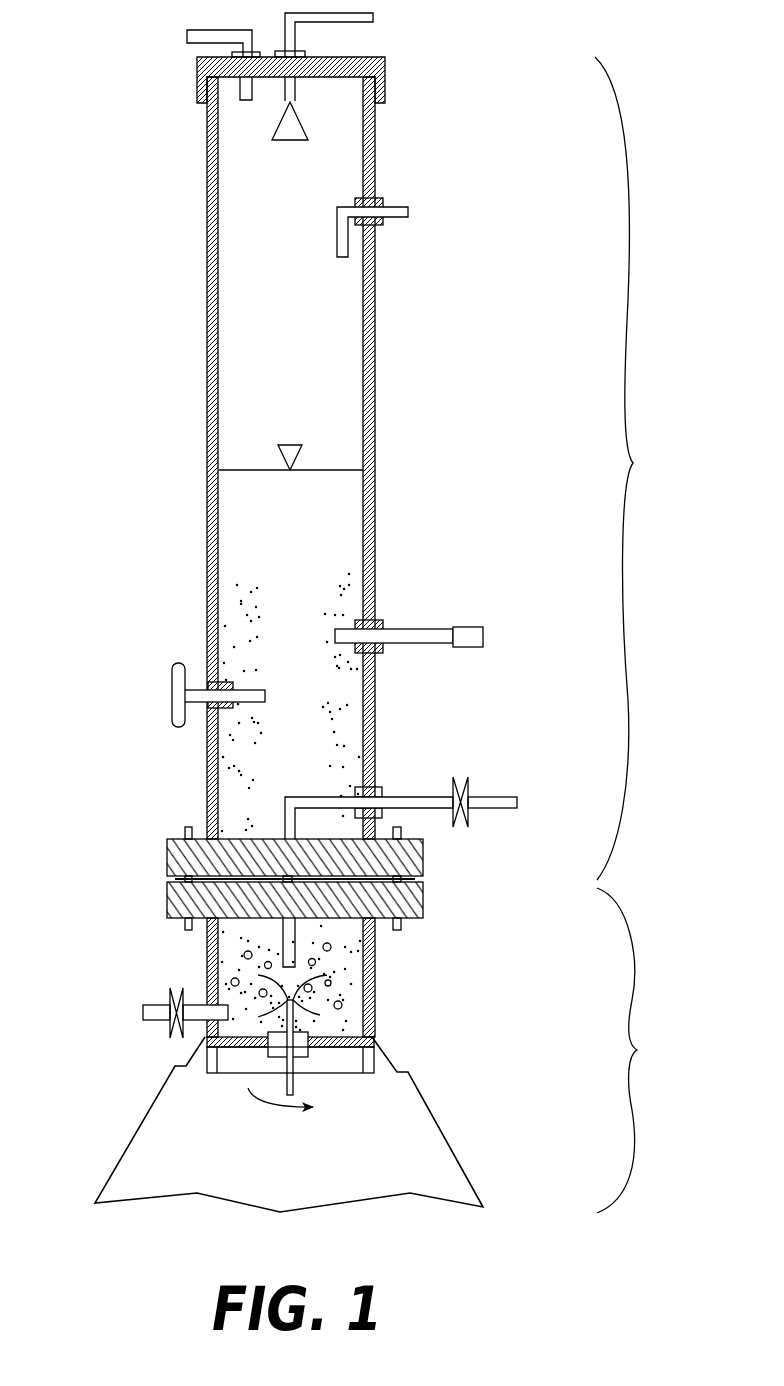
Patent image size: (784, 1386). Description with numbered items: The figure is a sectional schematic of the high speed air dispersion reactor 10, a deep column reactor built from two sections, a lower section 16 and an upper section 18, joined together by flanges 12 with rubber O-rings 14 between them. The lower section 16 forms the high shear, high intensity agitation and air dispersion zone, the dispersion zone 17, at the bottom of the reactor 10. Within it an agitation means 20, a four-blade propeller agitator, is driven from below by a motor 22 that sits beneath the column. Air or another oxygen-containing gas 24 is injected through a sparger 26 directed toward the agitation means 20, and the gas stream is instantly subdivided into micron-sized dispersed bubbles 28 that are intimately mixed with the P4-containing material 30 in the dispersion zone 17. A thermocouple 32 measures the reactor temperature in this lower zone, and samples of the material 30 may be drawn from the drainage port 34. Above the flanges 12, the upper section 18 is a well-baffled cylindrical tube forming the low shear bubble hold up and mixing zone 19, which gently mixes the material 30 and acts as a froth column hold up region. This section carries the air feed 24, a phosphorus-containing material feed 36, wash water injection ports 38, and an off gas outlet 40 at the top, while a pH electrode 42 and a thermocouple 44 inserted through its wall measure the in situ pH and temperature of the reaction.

The HSAD reactor 10 is at (103, 433).
The flanges 12 is at (180, 857).
The rubber O-rings 14 is at (176, 879).
The lower section 16 is at (641, 1050).
The dispersion zone 17 is at (340, 929).
The upper section 18 is at (637, 468).
The mixing zone 19 is at (305, 534).
The agitation means 20 is at (318, 1016).
The motor 22 is at (303, 1182).
The oxygen-containing gas 24 is at (520, 803).
The sparger 26 is at (242, 968).
The dispersed bubbles 28 is at (245, 953).
The P4-containing material 30 is at (348, 988).
The thermocouple 32 is at (335, 953).
The drainage port 34 is at (139, 1012).
The phosphorus-containing material feed 36 is at (415, 212).
The wash water injection ports 38 is at (377, 20).
The off gas outlet 40 is at (183, 36).
The pH electrode 42 is at (484, 637).
The thermocouple 44 is at (172, 705).